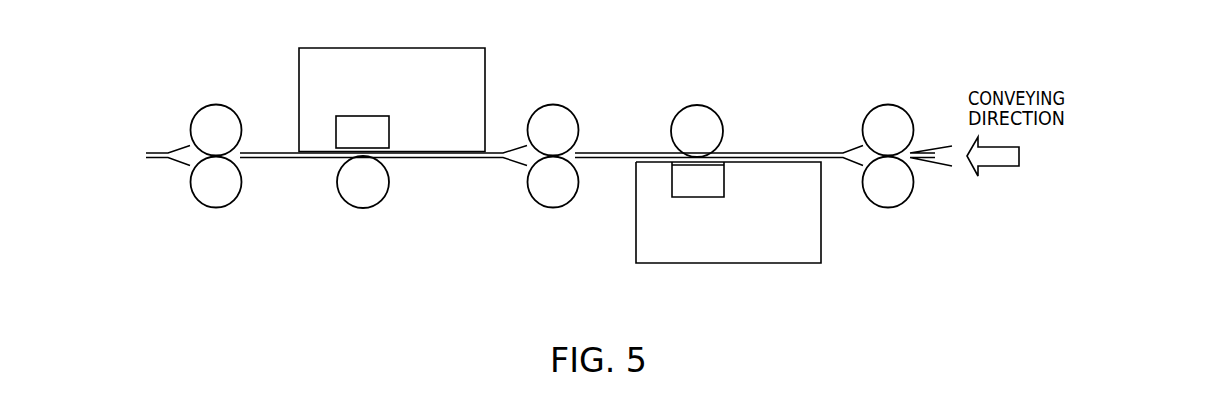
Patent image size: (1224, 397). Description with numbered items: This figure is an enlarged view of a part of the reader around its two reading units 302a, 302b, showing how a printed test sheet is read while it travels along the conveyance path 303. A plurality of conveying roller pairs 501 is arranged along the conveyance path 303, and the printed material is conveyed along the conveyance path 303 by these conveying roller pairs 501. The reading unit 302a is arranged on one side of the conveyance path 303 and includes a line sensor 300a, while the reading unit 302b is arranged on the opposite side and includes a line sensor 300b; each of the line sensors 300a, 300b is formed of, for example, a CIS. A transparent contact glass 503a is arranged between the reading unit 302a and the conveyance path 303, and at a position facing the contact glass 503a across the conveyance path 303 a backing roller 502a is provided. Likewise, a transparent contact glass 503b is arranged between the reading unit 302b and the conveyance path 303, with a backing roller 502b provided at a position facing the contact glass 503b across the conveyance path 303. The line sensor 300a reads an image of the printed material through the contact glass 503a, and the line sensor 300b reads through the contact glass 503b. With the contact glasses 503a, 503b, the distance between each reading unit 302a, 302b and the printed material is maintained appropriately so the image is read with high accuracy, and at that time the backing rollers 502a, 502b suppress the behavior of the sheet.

The conveying roller pairs 501 is at (216, 112).
The backing roller 502a is at (697, 107).
The backing roller 502b is at (360, 200).
The contact glass 503a is at (635, 162).
The contact glass 503b is at (490, 148).
The line sensor 300a is at (693, 200).
The line sensor 300b is at (363, 115).
The reading unit 302a is at (725, 267).
The reading unit 302b is at (402, 45).
The conveyance path 303 is at (413, 160).